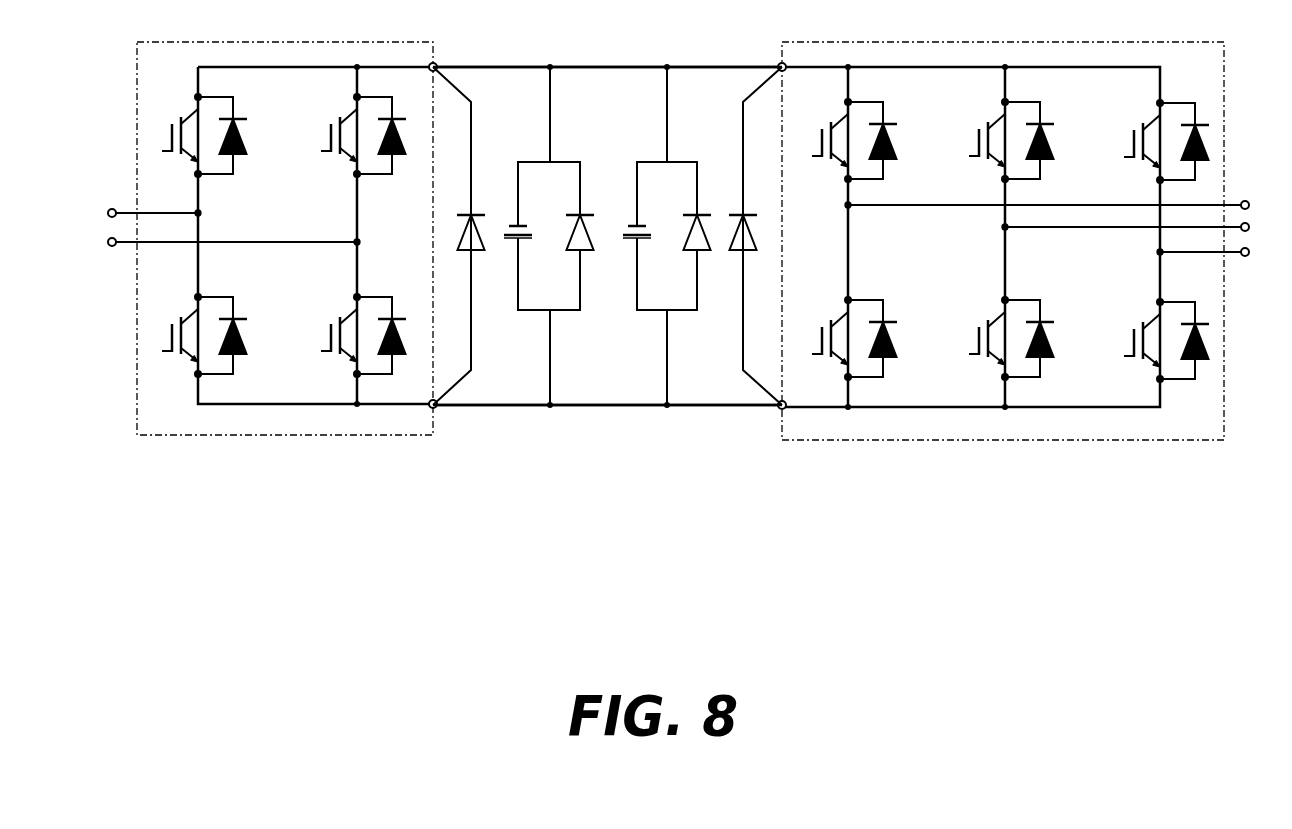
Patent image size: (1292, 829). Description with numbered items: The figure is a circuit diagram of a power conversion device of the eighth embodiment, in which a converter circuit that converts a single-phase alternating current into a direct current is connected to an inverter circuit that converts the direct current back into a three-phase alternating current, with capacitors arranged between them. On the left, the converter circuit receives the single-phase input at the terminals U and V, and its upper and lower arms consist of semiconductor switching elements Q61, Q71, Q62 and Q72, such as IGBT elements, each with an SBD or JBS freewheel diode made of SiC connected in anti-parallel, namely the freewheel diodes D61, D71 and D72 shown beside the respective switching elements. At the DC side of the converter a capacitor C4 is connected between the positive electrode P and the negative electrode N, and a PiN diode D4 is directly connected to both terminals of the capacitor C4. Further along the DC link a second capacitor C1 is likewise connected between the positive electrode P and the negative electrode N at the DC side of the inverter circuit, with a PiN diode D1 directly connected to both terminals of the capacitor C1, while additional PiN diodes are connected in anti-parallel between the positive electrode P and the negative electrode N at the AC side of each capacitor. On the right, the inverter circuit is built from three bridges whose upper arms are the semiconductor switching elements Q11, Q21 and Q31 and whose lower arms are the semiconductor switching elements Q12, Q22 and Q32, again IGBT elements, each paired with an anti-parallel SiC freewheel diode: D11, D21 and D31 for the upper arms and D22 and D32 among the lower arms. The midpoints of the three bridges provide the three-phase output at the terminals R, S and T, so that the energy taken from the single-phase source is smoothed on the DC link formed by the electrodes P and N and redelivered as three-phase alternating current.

The semiconductor switching element Q61 is at (174, 132).
The freewheel diode D61 is at (235, 145).
The semiconductor switching element Q71 is at (325, 135).
The freewheel diode D71 is at (392, 145).
The semiconductor switching element Q62 is at (173, 329).
The semiconductor switching element Q72 is at (330, 334).
The freewheel diode D72 is at (392, 324).
The capacitor C4 is at (521, 236).
The PiN diode D4 is at (578, 236).
The capacitor C1 is at (639, 236).
The PiN diode D1 is at (695, 236).
The semiconductor switching element Q11 is at (826, 134).
The freewheel diode D11 is at (889, 140).
The semiconductor switching element Q21 is at (974, 140).
The freewheel diode D21 is at (1048, 140).
The semiconductor switching element Q31 is at (1131, 141).
The freewheel diode D31 is at (1187, 126).
The semiconductor switching element Q12 is at (826, 331).
The semiconductor switching element Q22 is at (978, 335).
The freewheel diode D22 is at (1048, 334).
The semiconductor switching element Q32 is at (1137, 337).
The freewheel diode D32 is at (1187, 360).
The U-phase U is at (146, 213).
The V-phase V is at (226, 242).
The positive electrode P is at (607, 52).
The negative electrode N is at (607, 420).
The output terminal R is at (1057, 205).
The output terminal S is at (1136, 230).
The output terminal T is at (1214, 258).